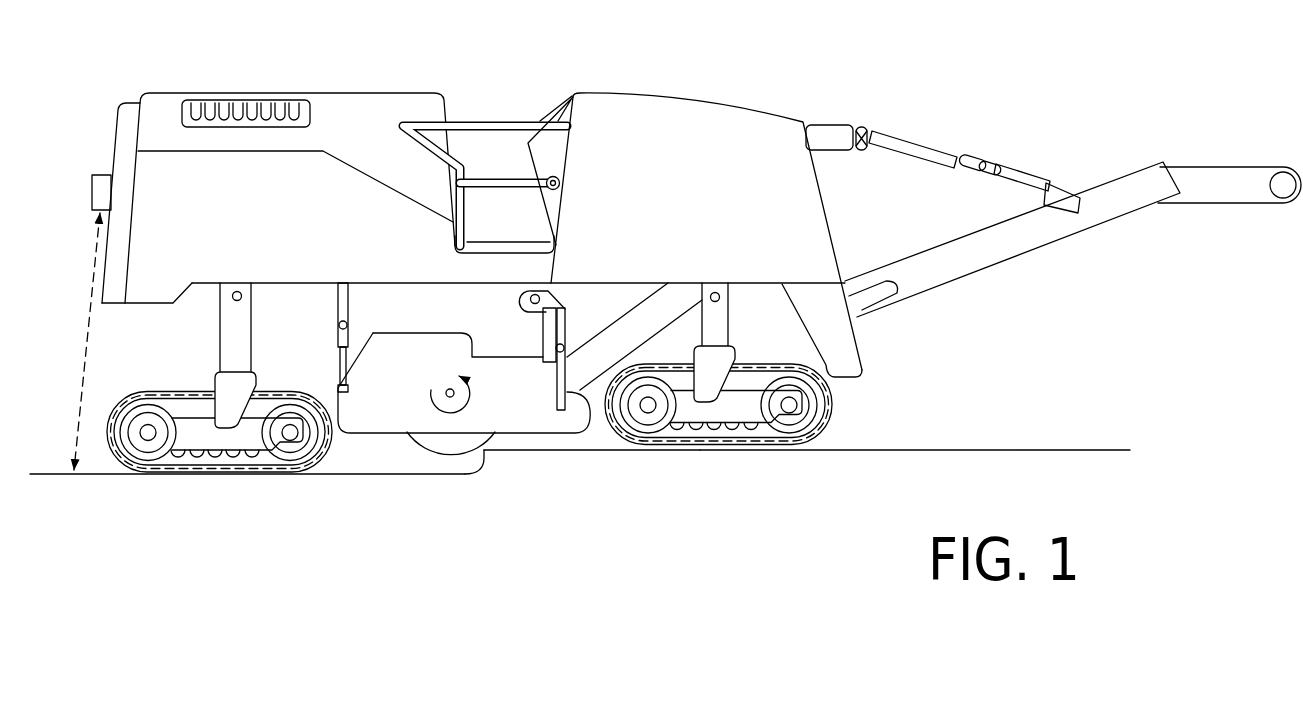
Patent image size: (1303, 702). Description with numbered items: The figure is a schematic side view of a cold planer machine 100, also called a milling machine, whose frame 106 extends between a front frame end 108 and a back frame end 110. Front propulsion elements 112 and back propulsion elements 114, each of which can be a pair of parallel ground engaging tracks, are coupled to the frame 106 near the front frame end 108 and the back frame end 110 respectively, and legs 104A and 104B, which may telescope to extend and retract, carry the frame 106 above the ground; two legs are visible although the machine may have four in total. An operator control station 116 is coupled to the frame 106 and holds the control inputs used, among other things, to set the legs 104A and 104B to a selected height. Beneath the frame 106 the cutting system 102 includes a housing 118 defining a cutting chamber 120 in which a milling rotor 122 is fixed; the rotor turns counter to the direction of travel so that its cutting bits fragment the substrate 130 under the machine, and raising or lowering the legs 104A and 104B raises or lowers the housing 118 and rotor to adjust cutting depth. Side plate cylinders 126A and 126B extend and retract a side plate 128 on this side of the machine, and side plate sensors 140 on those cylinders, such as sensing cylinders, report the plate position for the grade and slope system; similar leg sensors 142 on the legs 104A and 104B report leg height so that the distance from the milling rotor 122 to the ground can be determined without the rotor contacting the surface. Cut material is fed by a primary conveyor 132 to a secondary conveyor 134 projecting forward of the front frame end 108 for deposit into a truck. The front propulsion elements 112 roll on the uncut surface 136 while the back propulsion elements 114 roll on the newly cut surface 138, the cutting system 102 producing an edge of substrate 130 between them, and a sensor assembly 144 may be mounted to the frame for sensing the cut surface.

The cold planer machine 100 is at (665, 282).
The cutting system 102 is at (417, 476).
The leg 104A is at (251, 347).
The leg 104B is at (730, 348).
The frame 106 is at (701, 120).
The front frame end 108 is at (846, 228).
The back frame end 110 is at (100, 131).
The front propulsion elements 112 is at (702, 472).
The back propulsion elements 114 is at (169, 492).
The operator control station 116 is at (506, 94).
The housing 118 is at (404, 312).
The cutting chamber 120 is at (381, 442).
The milling rotor 122 is at (487, 455).
The side plate cylinder 126A is at (340, 337).
The side plate cylinder 126B is at (566, 337).
The side plate 128 is at (541, 445).
The substrate 130 is at (453, 476).
The primary conveyor 132 is at (646, 293).
The secondary conveyor 134 is at (981, 268).
The surface 136 is at (841, 452).
The surface 138 is at (103, 476).
The side plate sensor 140 is at (339, 303).
The leg sensor 142 is at (237, 291).
The sensor assembly 144 is at (92, 195).